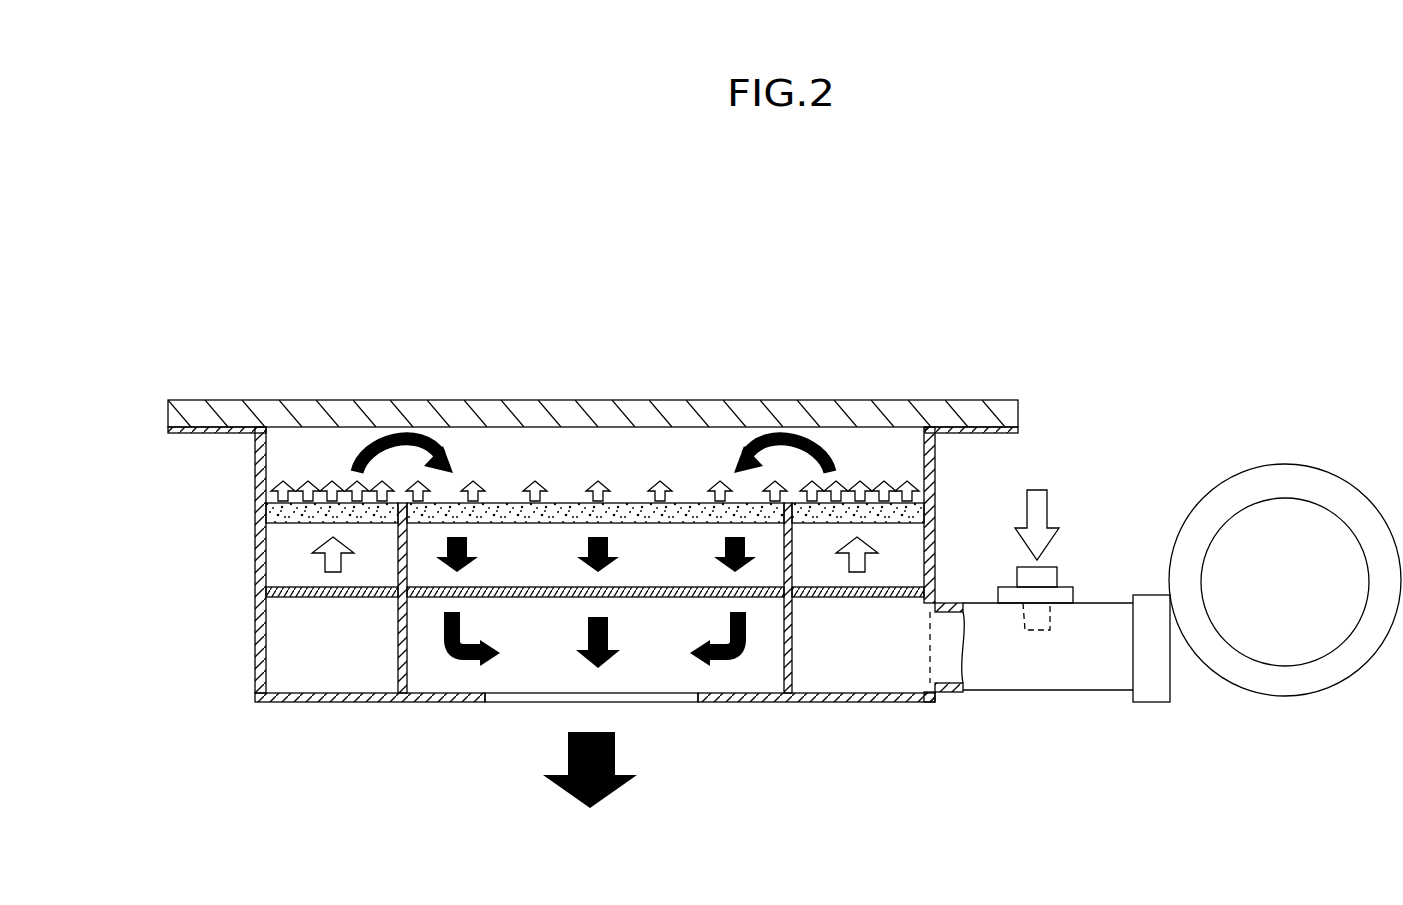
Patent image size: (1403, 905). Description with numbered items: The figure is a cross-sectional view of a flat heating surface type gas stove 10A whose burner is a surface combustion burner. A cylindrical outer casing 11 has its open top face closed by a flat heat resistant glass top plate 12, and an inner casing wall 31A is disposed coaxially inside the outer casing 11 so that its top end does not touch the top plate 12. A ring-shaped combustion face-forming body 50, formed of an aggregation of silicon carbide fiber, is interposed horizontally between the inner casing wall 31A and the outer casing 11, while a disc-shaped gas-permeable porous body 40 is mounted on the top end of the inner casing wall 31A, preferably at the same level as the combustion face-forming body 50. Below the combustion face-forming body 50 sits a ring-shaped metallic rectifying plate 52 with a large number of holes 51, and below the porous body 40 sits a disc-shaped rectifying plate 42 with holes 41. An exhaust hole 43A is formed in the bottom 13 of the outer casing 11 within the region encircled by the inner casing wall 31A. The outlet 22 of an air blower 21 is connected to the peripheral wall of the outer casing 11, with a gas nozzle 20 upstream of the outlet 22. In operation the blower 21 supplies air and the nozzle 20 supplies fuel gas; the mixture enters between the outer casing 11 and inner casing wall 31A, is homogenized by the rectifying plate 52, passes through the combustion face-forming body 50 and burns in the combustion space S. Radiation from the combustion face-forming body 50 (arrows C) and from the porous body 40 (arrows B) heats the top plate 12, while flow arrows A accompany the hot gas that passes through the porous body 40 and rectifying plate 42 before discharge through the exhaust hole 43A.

The gas stove 10A is at (1132, 323).
The outer casing 11 is at (256, 638).
The top plate 12 is at (247, 412).
The bottom 13 is at (340, 703).
The gas nozzle 20 is at (1050, 578).
The air blower 21 is at (1299, 683).
The outlet 22 is at (946, 655).
The inner casing wall 31A is at (407, 655).
The gas-permeable porous body 40 is at (632, 503).
The holes 41 is at (543, 597).
The rectifying plate 42 is at (648, 597).
The exhaust hole 43A is at (633, 703).
The combustion face-forming body 50 is at (297, 513).
The holes 51 is at (370, 598).
The rectifying plate 52 is at (292, 598).
The arrows A is at (388, 432).
The arrows B is at (490, 480).
The arrows C is at (330, 480).
The combustion space S is at (712, 460).